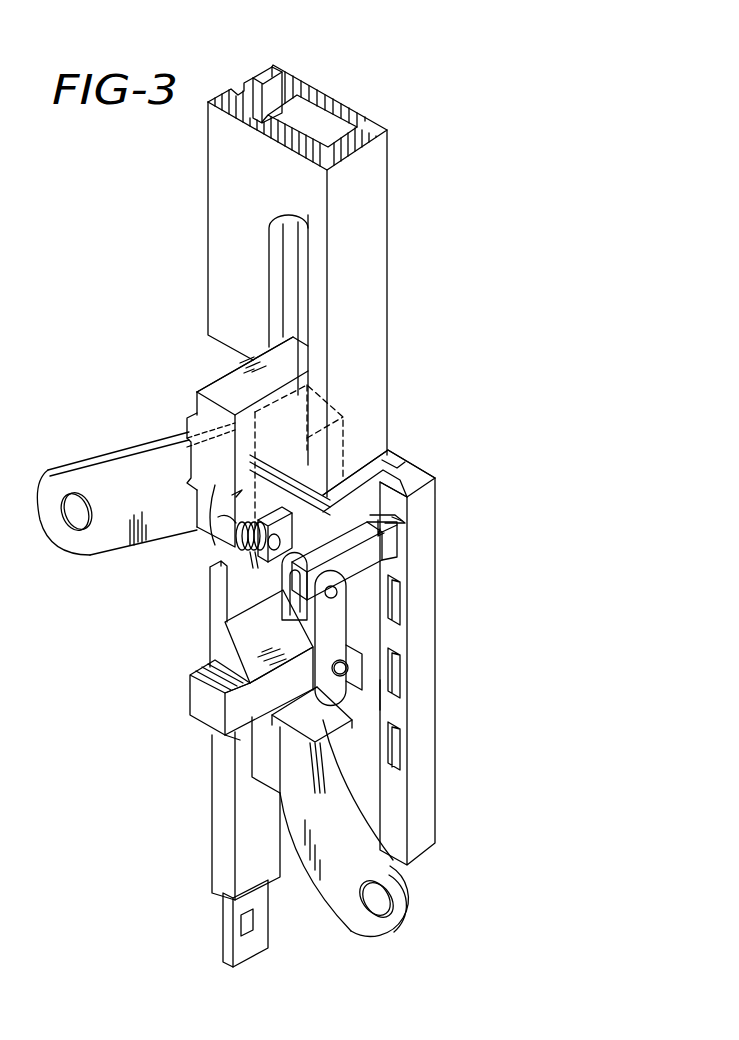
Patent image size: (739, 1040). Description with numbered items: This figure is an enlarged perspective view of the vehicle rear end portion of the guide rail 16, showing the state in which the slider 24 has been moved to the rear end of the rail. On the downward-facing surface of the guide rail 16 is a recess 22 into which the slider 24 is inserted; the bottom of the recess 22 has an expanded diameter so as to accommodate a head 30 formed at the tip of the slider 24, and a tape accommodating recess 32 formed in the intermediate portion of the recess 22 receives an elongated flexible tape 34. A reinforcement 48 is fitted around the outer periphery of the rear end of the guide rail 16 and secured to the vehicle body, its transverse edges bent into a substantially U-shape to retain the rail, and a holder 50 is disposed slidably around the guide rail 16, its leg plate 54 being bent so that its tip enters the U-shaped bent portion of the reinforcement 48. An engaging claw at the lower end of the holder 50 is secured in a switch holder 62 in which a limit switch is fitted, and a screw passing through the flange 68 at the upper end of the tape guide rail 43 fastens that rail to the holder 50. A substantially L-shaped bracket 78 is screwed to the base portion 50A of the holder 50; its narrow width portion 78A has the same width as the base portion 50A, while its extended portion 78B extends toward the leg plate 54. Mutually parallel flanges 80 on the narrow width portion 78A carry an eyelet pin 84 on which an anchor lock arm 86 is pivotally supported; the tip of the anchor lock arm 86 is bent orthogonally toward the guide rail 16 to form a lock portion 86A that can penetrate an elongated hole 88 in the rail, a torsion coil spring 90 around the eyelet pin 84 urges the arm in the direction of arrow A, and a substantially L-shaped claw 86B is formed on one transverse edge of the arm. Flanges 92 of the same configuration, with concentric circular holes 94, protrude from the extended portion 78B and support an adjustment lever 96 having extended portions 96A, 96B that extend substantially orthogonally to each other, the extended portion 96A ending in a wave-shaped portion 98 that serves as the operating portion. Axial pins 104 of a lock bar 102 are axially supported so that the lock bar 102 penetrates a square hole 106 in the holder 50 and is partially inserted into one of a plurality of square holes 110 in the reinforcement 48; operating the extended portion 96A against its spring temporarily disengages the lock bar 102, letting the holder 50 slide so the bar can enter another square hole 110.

The guide rail 16 is at (396, 223).
The recess 22 is at (332, 116).
The slider 24 is at (108, 456).
The head 30 is at (340, 417).
The tape accommodating recess 32 is at (276, 66).
The flexible tape 34 is at (225, 925).
The tape guide rail 43 is at (217, 828).
The reinforcement 48 is at (415, 893).
The holder 50 is at (393, 453).
The base portion 50A is at (343, 463).
The leg plate 54 is at (373, 500).
The switch holder 62 is at (348, 722).
The flange 68 is at (212, 650).
The bracket 78 is at (350, 607).
The narrow width portion 78A is at (220, 533).
The extended portion 78B is at (350, 665).
The flanges 80 is at (193, 512).
The eyelet pin 84 is at (265, 562).
The anchor lock arm 86 is at (200, 390).
The lock portion 86A is at (222, 375).
The claw 86B is at (188, 427).
The elongated hole 88 is at (273, 243).
The torsion coil spring 90 is at (250, 565).
The flanges 92 is at (380, 693).
The circular holes 94 is at (370, 660).
The adjustment lever 96 is at (190, 700).
The extended portion 96A is at (200, 675).
The extended portion 96B is at (285, 600).
The wave-shaped portion 98 is at (205, 722).
The lock bar 102 is at (360, 568).
The axial pins 104 is at (380, 575).
The square hole 106 is at (380, 526).
The square holes 110 is at (397, 575).